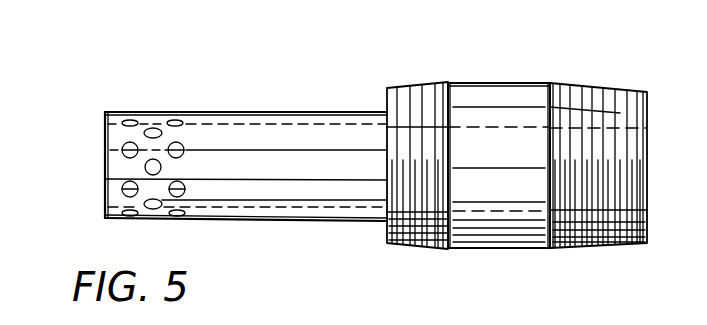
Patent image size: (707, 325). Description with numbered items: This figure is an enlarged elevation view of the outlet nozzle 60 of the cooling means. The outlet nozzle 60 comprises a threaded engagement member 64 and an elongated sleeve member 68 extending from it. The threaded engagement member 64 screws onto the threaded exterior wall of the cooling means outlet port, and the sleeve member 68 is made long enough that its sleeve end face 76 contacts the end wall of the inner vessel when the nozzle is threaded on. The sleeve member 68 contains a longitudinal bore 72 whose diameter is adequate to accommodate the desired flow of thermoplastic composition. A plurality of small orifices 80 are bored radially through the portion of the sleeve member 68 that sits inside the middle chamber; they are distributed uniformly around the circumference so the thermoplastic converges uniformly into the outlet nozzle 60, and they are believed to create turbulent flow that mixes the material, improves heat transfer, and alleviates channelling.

The outlet nozzle 60 is at (513, 76).
The threaded engagement member 64 is at (552, 118).
The elongated sleeve member 68 is at (283, 112).
The longitudinal bore 72 is at (265, 170).
The sleeve end face 76 is at (103, 142).
The small orifices 80 is at (125, 189).